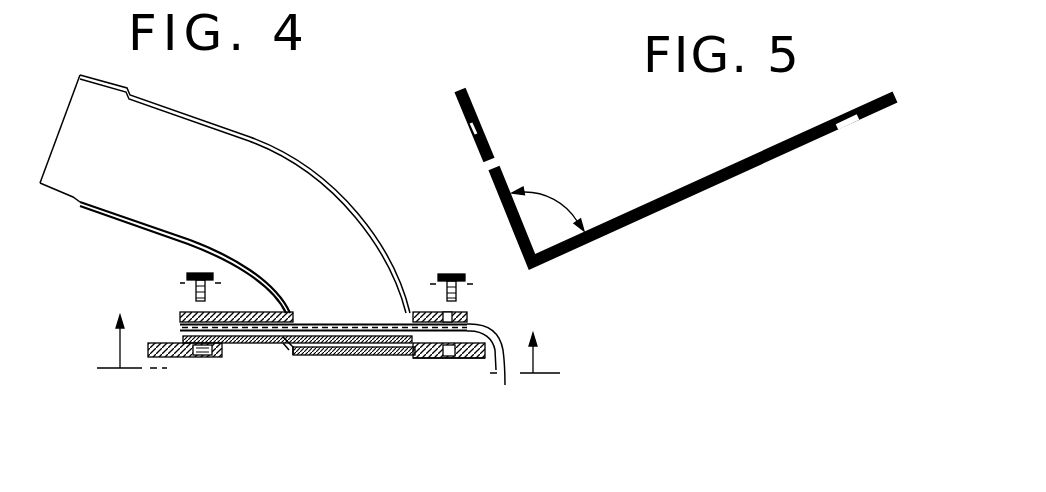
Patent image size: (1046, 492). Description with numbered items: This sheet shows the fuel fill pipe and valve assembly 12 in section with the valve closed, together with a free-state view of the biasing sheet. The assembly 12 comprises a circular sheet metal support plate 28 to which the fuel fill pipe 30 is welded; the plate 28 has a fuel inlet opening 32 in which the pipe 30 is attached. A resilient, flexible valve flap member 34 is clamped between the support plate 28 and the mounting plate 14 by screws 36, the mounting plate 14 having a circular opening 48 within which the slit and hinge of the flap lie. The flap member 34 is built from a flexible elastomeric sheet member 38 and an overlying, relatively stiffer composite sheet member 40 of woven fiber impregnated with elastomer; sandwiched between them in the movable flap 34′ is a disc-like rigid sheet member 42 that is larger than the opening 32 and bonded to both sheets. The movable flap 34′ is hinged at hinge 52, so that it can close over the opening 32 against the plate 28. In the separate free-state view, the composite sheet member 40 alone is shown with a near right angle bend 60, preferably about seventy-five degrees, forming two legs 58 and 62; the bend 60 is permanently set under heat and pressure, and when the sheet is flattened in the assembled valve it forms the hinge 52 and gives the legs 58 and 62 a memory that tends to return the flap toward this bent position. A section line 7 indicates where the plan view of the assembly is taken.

In FIG. 4, the fuel fill pipe and valve assembly 12 is at (342, 175).
In FIG. 4, the mounting plate 14 is at (468, 360).
In FIG. 4, the support plate 28 is at (467, 322).
In FIG. 4, the fuel fill pipe 30 is at (222, 133).
In FIG. 4, the fuel inlet opening 32 is at (377, 324).
In FIG. 4, the valve flap member 34 is at (336, 371).
In FIG. 4, the movable flap 34′ is at (360, 325).
In FIG. 4, the screws 36 is at (191, 275).
In FIG. 4, the elastomeric sheet member 38 is at (181, 327).
In FIG. 4, the composite sheet member 40 is at (387, 357).
In FIG. 5, the composite sheet member 40 is at (783, 170).
In FIG. 4, the rigid sheet member 42 is at (283, 344).
In FIG. 4, the circular opening 48 is at (413, 358).
In FIG. 4, the hinge 52 is at (259, 327).
In FIG. 5, the leg 58 is at (475, 142).
In FIG. 5, the bend 60 is at (531, 268).
In FIG. 5, the leg 62 is at (641, 218).
In FIG. 4, the section line 7 is at (326, 344).